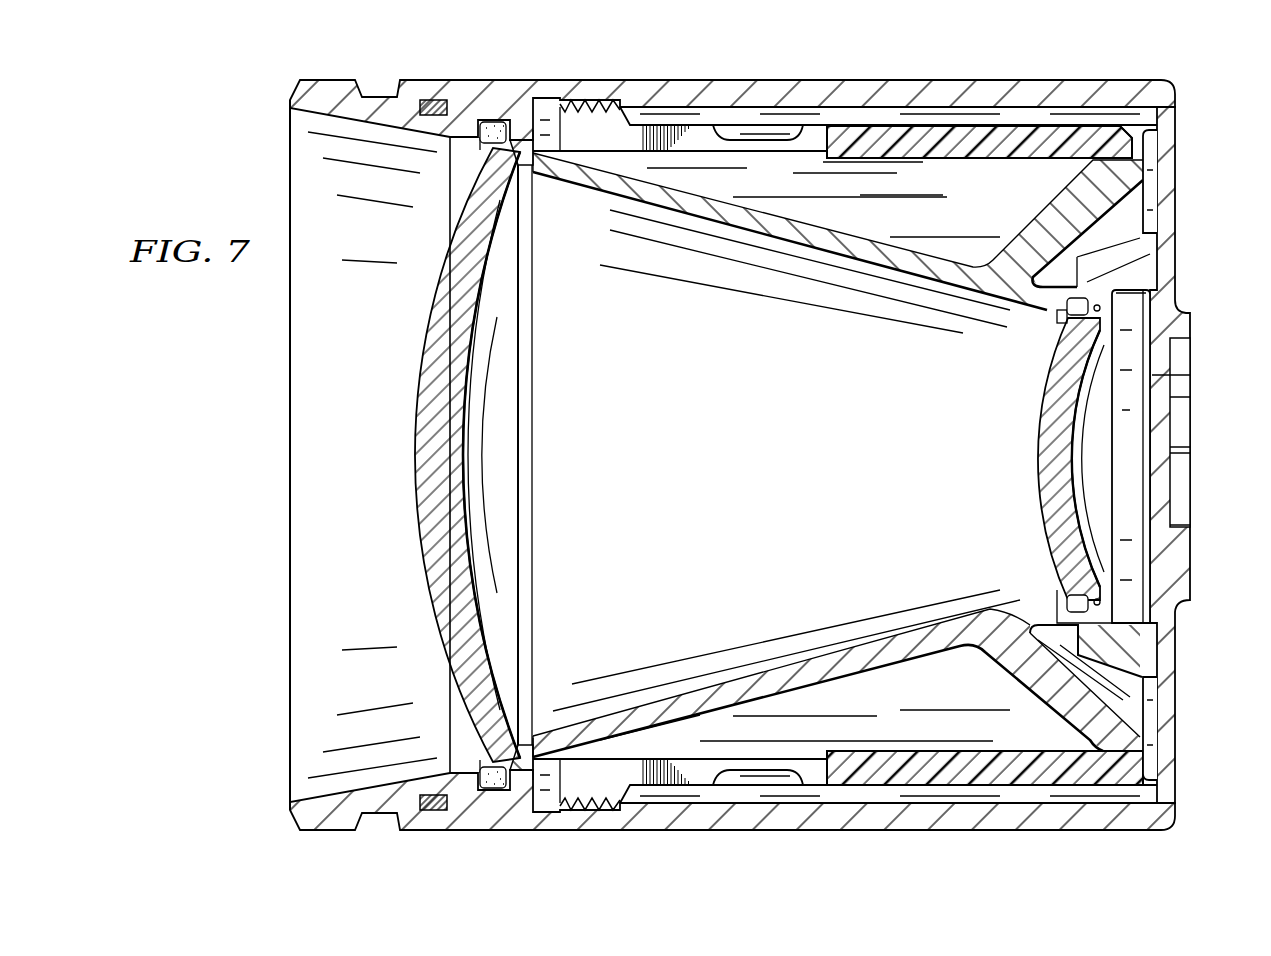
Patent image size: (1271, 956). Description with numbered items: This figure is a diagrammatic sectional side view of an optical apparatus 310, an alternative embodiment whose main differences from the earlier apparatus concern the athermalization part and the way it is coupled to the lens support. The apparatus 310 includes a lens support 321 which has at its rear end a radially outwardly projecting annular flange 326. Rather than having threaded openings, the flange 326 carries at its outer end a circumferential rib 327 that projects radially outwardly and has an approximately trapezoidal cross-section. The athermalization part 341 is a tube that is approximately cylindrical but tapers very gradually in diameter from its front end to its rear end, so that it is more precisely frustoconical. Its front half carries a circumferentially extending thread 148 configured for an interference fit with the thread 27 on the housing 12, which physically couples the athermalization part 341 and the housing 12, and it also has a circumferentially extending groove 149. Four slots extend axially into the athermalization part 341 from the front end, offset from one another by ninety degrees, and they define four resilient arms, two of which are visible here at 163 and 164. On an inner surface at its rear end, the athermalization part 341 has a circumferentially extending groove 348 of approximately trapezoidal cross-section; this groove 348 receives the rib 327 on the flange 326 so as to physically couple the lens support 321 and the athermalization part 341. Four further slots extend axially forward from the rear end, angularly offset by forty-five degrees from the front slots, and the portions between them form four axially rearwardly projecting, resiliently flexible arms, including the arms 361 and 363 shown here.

The housing 12 is at (845, 88).
The thread 27 is at (603, 112).
The thread 148 is at (585, 98).
The groove 149 is at (760, 130).
The resilient arm 163 is at (650, 777).
The resilient arm 164 is at (688, 132).
The optical apparatus 310 is at (258, 372).
The lens support 321 is at (800, 232).
The annular flange 326 is at (1030, 236).
The circumferential rib 327 is at (1088, 138).
The athermalization part 341 is at (955, 132).
The groove 348 is at (1100, 157).
The resilient arm 361 is at (1176, 133).
The resilient arm 363 is at (1107, 780).